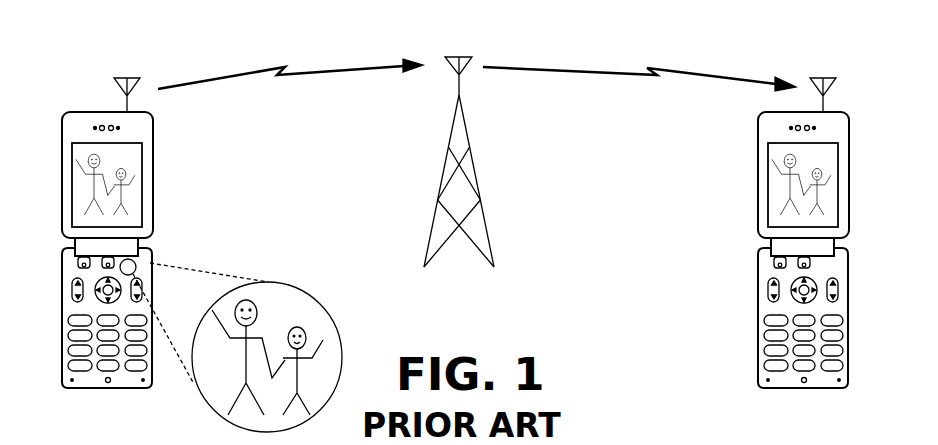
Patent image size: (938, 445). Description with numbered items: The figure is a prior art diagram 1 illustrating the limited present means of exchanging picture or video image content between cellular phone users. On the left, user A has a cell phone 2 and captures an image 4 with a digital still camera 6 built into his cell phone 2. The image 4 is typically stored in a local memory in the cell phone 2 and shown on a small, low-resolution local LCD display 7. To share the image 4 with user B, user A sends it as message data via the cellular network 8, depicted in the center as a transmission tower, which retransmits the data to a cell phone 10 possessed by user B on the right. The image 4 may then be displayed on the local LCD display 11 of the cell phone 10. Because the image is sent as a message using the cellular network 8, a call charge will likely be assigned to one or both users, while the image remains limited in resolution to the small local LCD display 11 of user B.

The prior art diagram 1 is at (84, 34).
The cell phone 2 is at (130, 254).
The image 4 is at (305, 291).
The digital still camera (DSC) 6 is at (135, 262).
The local LCD display 7 is at (142, 165).
The cellular network 8 is at (496, 194).
The cell phone 10 is at (803, 254).
The local LCD display 11 is at (838, 165).